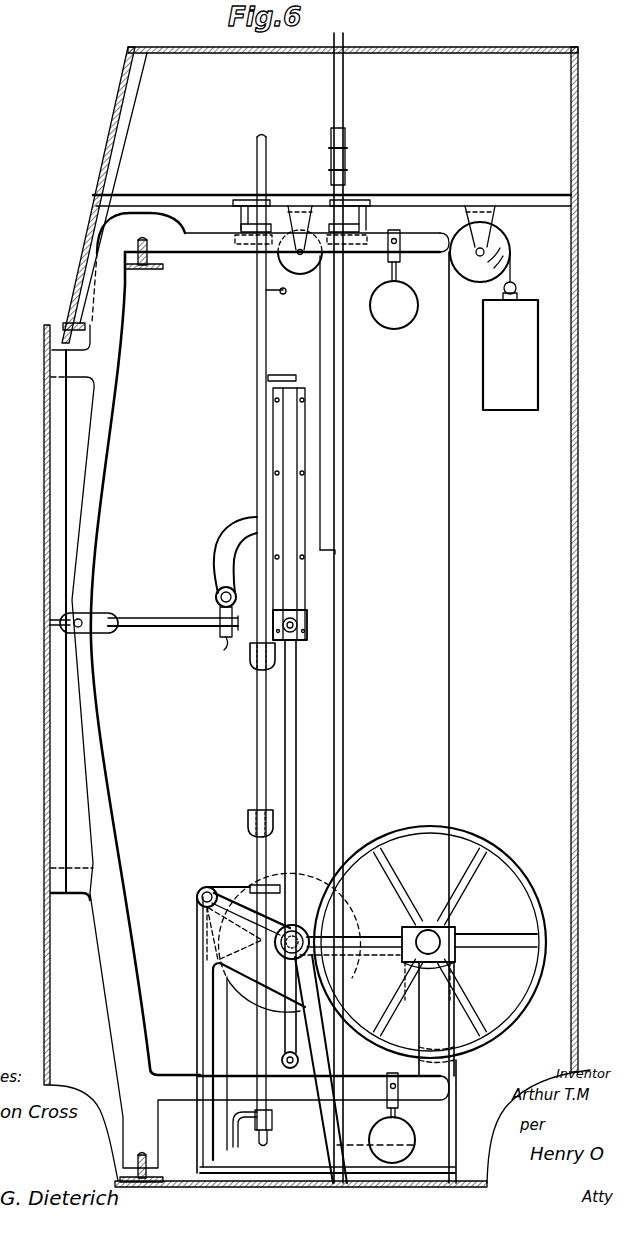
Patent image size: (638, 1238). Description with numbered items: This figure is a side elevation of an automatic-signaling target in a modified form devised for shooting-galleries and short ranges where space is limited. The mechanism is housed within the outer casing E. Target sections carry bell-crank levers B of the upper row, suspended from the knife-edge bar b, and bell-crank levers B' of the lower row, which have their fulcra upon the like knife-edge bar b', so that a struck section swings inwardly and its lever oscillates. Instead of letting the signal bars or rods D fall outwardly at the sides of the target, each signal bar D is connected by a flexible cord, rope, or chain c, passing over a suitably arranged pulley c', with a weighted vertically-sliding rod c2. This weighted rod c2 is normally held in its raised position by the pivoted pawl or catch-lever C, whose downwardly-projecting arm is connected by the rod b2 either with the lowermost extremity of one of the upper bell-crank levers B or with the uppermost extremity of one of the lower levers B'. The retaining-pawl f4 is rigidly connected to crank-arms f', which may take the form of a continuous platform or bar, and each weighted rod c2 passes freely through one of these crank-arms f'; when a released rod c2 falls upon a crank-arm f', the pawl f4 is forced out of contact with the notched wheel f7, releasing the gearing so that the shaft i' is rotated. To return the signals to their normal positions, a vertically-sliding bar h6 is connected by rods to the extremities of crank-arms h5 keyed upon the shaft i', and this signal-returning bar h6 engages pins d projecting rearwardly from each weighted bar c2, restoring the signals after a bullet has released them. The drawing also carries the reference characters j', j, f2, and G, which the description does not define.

The outer casing E is at (317, 617).
The bell-crank lever B is at (126, 644).
The bell-crank lever B' is at (125, 759).
The knife-edge bar b is at (152, 262).
The knife-edge bar b' is at (120, 752).
The rod b2 is at (148, 624).
The pivoted pawl or catch-lever C is at (230, 562).
The weighted vertically-sliding rod c2 is at (257, 312).
The pulley c' is at (300, 250).
The flexible cord, rope, or chain c is at (342, 405).
The pin d is at (285, 375).
The signal bar or rod D is at (344, 376).
The vertically-sliding bar h6 is at (298, 614).
The crank-arm h5 is at (297, 705).
The pulley j' is at (480, 244).
The weight and cord j is at (493, 717).
The shaft i' is at (320, 1054).
The pivot f2 is at (197, 897).
The crank-arm f' is at (243, 874).
The retaining-pawl f4 is at (205, 926).
The notched wheel f7 is at (290, 942).
The frame G is at (197, 1012).